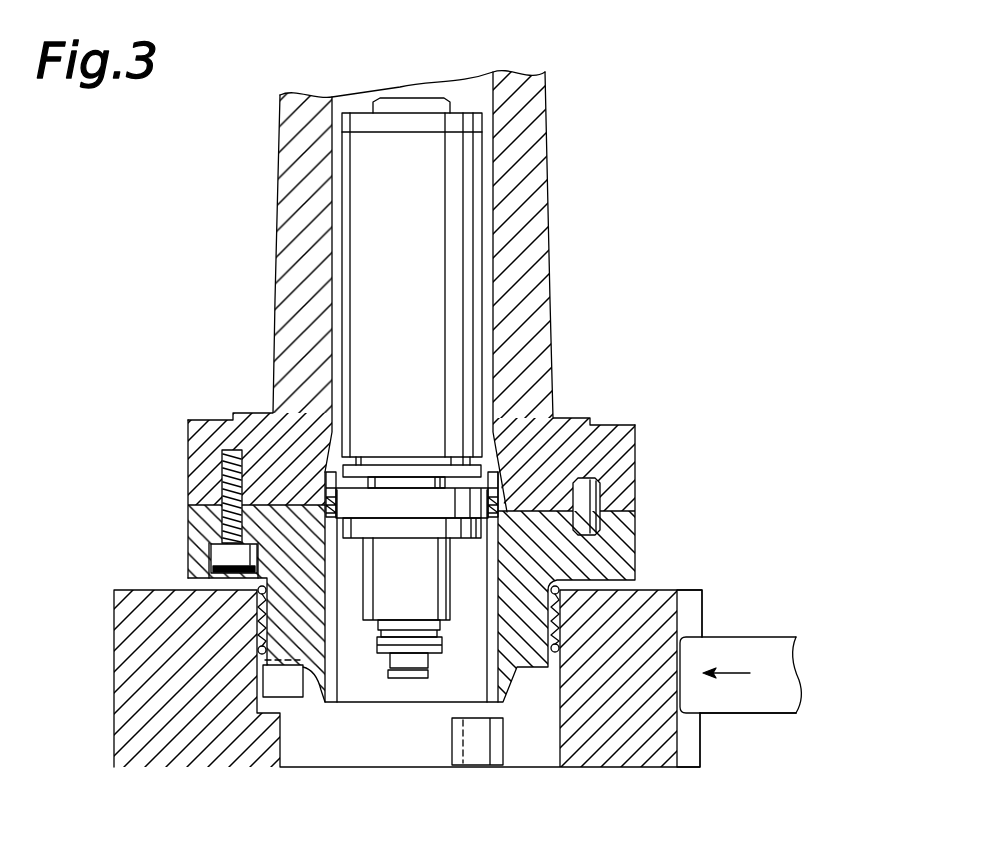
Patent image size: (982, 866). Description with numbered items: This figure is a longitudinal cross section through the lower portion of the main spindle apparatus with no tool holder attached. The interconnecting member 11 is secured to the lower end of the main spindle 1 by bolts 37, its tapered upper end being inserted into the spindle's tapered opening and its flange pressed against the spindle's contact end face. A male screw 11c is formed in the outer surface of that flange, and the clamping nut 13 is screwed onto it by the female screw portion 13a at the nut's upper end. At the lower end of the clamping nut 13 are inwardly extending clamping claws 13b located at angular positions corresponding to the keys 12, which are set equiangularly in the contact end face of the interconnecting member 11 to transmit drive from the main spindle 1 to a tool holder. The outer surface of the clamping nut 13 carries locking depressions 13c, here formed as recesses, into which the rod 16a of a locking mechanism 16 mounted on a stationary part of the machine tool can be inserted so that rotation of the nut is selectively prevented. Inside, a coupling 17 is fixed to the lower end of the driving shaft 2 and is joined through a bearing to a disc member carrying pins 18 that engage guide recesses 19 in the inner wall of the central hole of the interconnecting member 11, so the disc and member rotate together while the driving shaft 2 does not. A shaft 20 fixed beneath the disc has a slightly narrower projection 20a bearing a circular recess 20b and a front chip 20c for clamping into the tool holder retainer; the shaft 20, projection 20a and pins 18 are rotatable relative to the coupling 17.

The main spindle 1 is at (549, 140).
The driving shaft 2 is at (402, 103).
The interconnecting member 11 is at (643, 535).
The male screw 11c is at (257, 615).
The keys 12 is at (287, 688).
The clamping nut 13 is at (710, 753).
The female screw portion 13a is at (258, 643).
The clamping claws 13b is at (226, 743).
The locking depressions 13c is at (686, 762).
The locking mechanism 16 is at (772, 633).
The rod 16a is at (777, 707).
The coupling 17 is at (420, 276).
The pins 18 is at (330, 495).
The guide recesses 19 is at (332, 547).
The shaft 20 is at (377, 600).
The projection 20a is at (410, 625).
The circular recess 20b is at (385, 657).
The front chip 20c is at (408, 679).
The bolts 37 is at (225, 474).